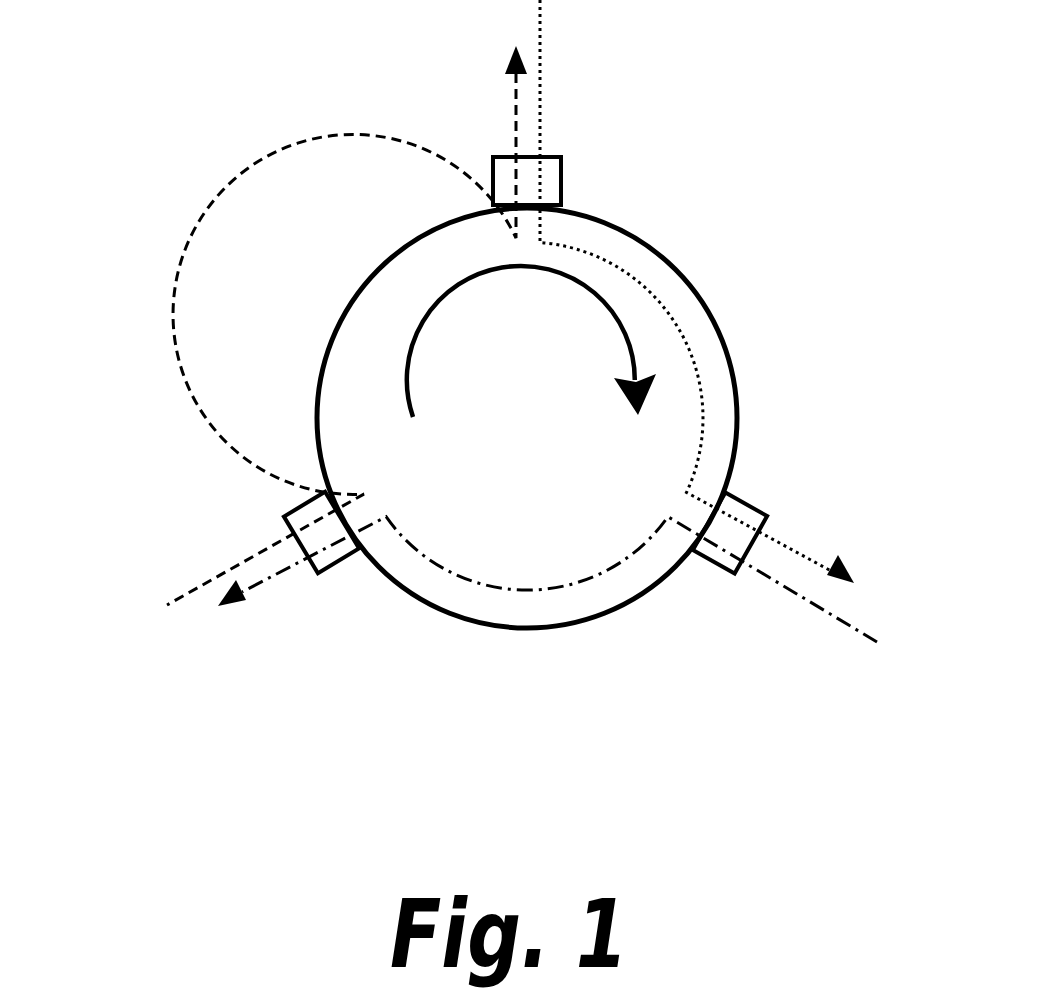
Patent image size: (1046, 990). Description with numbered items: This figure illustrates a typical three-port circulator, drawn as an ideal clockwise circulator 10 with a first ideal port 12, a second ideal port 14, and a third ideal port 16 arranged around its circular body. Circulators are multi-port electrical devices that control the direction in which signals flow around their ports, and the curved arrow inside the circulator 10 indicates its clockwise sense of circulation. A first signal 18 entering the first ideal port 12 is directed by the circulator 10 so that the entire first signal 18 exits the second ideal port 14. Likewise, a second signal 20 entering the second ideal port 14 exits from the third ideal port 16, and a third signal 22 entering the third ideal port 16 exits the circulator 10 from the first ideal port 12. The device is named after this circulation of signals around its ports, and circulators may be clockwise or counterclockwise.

The ideal clockwise circulator 10 is at (703, 297).
The first ideal port 12 is at (307, 505).
The second ideal port 14 is at (493, 192).
The third ideal port 16 is at (747, 497).
The first signal 18 is at (190, 593).
The second signal 20 is at (540, 28).
The third signal 22 is at (815, 605).